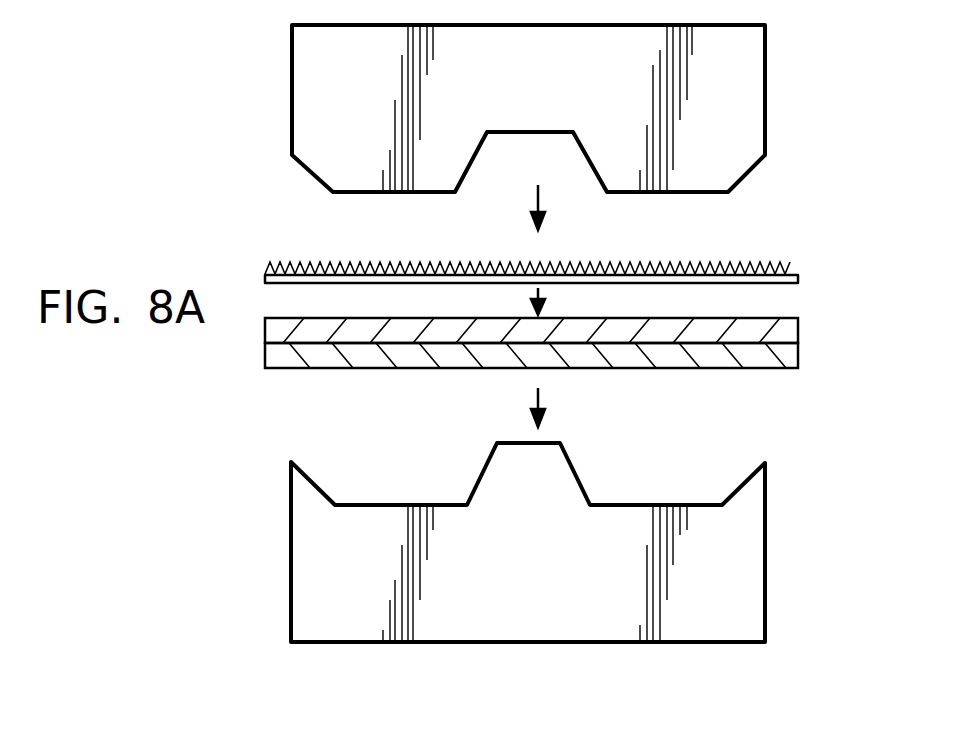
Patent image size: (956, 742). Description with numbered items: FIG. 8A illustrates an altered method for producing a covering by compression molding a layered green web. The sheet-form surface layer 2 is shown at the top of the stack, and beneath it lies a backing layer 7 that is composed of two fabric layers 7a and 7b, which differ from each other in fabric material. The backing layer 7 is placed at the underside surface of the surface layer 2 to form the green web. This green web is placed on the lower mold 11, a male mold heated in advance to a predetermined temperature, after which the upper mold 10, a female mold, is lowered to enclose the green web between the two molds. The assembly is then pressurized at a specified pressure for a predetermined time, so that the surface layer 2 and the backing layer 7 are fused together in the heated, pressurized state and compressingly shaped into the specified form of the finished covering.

The upper mold 10 is at (755, 133).
The surface layer 2 is at (798, 281).
The backing layer 7 is at (577, 346).
The fabric layer 7a is at (799, 320).
The fabric layer 7b is at (807, 343).
The lower mold 11 is at (752, 595).